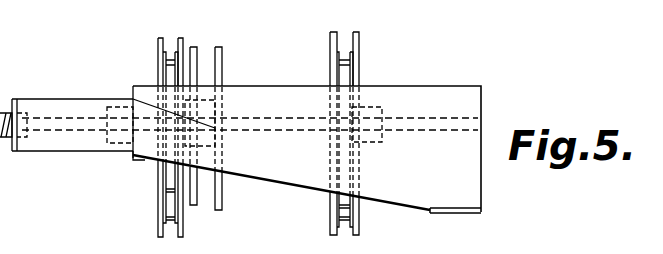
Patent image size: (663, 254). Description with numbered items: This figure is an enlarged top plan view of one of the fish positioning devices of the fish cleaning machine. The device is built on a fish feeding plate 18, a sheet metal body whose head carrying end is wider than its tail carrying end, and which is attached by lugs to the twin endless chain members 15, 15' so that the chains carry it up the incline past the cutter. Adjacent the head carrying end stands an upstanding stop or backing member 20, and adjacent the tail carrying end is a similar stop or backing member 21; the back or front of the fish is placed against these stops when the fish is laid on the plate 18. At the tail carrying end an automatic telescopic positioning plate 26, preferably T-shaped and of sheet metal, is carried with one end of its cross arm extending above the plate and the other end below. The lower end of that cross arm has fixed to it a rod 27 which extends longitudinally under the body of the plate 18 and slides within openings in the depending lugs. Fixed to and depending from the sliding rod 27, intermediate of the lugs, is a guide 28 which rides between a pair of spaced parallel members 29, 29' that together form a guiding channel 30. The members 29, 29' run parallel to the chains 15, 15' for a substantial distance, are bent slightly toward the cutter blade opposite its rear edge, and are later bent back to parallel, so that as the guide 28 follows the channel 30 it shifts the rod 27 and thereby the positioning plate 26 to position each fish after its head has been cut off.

The endless chain member 15 is at (150, 90).
The endless chain member 15' is at (380, 128).
The fish feeding plate 18 is at (251, 149).
The stop or backing member 20 is at (462, 213).
The stop or backing member 21 is at (141, 162).
The telescopic positioning plate 26 is at (48, 107).
The rod 27 is at (65, 122).
The guide 28 is at (236, 153).
The spaced parallel member 29 is at (201, 207).
The spaced parallel member 29' is at (246, 202).
The guiding channel 30 is at (204, 66).